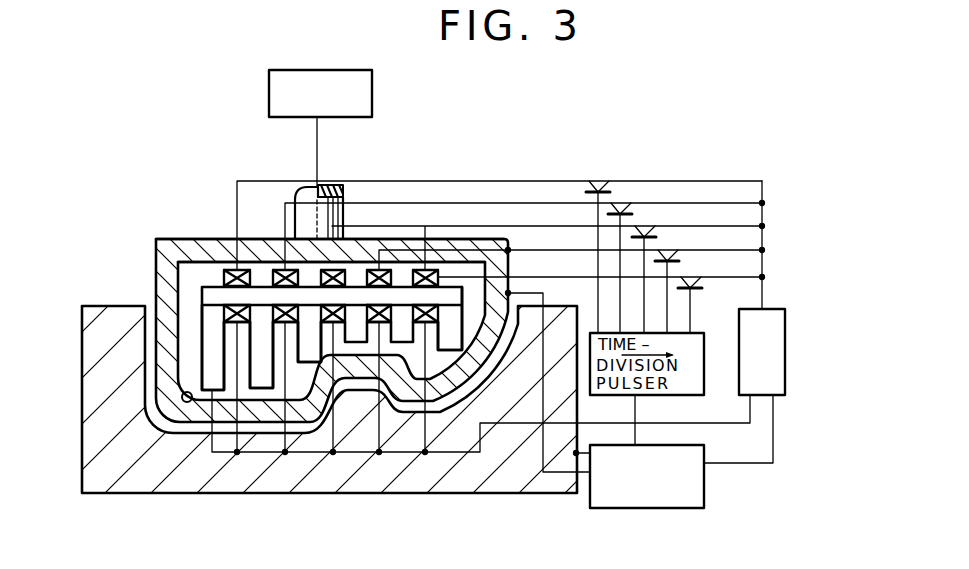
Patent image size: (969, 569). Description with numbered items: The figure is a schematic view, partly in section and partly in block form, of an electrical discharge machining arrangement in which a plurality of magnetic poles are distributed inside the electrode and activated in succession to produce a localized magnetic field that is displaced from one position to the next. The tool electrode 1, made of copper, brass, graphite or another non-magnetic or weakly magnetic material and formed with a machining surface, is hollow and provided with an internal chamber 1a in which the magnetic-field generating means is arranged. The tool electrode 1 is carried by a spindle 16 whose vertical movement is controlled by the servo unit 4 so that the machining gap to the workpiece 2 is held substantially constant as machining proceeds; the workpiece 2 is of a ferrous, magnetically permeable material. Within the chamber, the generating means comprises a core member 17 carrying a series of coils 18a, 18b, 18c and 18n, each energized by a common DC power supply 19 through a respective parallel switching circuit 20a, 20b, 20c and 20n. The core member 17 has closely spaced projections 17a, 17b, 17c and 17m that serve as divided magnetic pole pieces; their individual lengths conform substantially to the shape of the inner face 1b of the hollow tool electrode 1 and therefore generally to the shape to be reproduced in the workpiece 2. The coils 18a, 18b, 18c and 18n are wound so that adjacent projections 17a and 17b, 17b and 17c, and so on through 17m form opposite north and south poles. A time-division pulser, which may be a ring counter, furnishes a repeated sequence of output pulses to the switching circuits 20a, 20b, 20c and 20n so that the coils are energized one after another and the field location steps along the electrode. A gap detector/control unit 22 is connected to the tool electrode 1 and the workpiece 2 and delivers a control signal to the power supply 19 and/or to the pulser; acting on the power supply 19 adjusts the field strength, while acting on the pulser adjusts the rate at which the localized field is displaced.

The tool electrode 1 is at (156, 267).
The internal chamber 1a is at (163, 255).
The inner face 1b is at (184, 404).
The workpiece 2 is at (176, 494).
The servo unit 4 is at (269, 91).
The spindle 16 is at (327, 187).
The core member 17 is at (207, 293).
The projection 17a is at (207, 370).
The projection 17b is at (263, 390).
The projection 17c is at (306, 363).
The projection 17m is at (478, 374).
The coil 18a is at (227, 259).
The coil 18b is at (281, 258).
The coil 18c is at (368, 248).
The coil 18n is at (425, 230).
The DC power supply 19 is at (780, 309).
The switching circuit 20a is at (597, 181).
The switching circuit 20b is at (622, 212).
The switching circuit 20c is at (647, 236).
The switching circuit 20n is at (691, 286).
The gap detector/control unit 22 is at (647, 492).